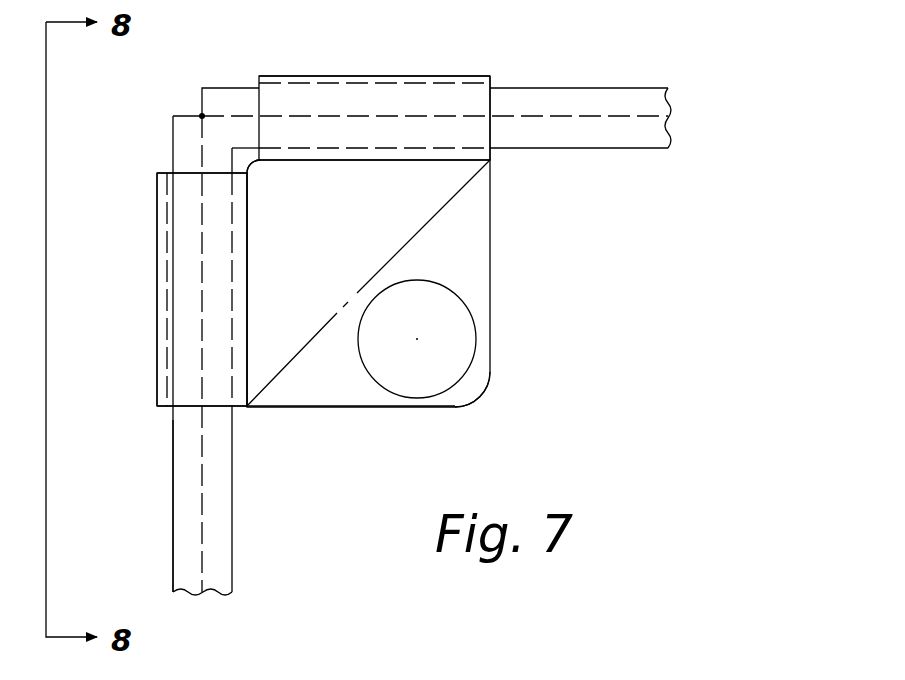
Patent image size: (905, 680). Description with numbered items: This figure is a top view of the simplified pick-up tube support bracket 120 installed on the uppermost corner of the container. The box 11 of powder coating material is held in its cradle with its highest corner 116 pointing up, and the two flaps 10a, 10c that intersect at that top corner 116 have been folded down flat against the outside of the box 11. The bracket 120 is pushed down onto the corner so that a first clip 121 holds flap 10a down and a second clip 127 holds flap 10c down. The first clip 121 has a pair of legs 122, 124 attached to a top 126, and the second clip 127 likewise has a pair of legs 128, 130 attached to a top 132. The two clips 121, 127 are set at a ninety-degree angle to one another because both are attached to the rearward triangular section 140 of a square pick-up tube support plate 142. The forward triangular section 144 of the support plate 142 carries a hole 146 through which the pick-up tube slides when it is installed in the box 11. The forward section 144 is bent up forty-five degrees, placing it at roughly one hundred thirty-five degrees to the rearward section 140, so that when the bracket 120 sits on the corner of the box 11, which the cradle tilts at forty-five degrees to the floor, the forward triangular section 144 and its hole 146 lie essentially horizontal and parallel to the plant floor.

The flap 10a is at (173, 581).
The flap 10c is at (645, 88).
The box 11 is at (236, 564).
The highest corner 116 is at (202, 116).
The pick-up tube support bracket 120 is at (122, 198).
The first clip 121 is at (155, 391).
The leg 122 is at (157, 326).
The leg 124 is at (250, 322).
The top 126 is at (183, 237).
The second clip 127 is at (288, 72).
The leg 128 is at (358, 73).
The leg 130 is at (305, 163).
The top 132 is at (493, 110).
The rearward triangular section 140 is at (442, 185).
The pick-up tube support plate 142 is at (340, 412).
The forward triangular section 144 is at (482, 367).
The hole 146 is at (452, 385).